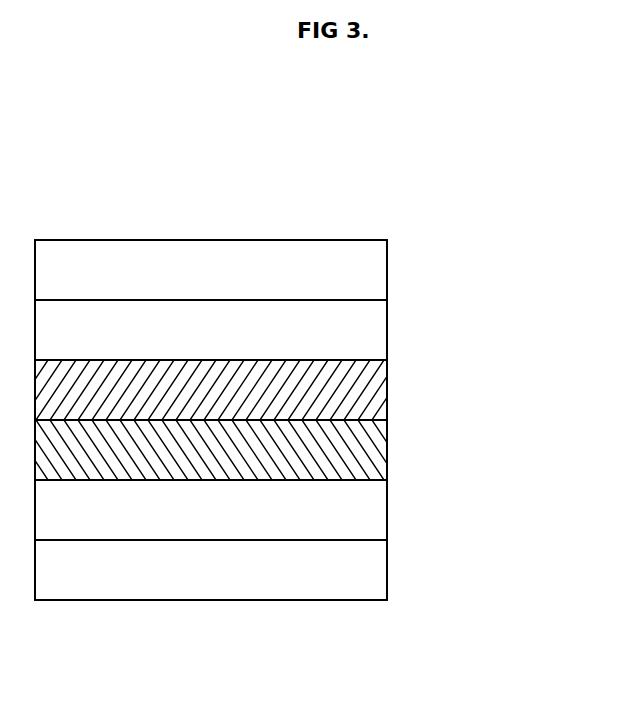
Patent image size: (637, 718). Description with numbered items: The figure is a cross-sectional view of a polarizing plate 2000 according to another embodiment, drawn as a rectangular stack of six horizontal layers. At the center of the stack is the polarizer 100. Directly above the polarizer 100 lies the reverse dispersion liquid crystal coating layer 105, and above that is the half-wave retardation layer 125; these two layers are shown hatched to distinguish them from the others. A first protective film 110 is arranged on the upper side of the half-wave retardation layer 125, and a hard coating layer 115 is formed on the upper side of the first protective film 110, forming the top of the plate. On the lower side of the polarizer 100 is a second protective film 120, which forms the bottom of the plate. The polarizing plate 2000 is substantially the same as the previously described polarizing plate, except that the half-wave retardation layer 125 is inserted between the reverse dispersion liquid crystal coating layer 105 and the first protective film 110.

The polarizing plate 2000 is at (450, 167).
The hard coating layer 115 is at (373, 269).
The first protective film 110 is at (373, 333).
The λ/2 retardation layer 125 is at (373, 389).
The reverse dispersion liquid crystal coating layer 105 is at (373, 454).
The polarizer 100 is at (373, 511).
The second protective film 120 is at (373, 569).